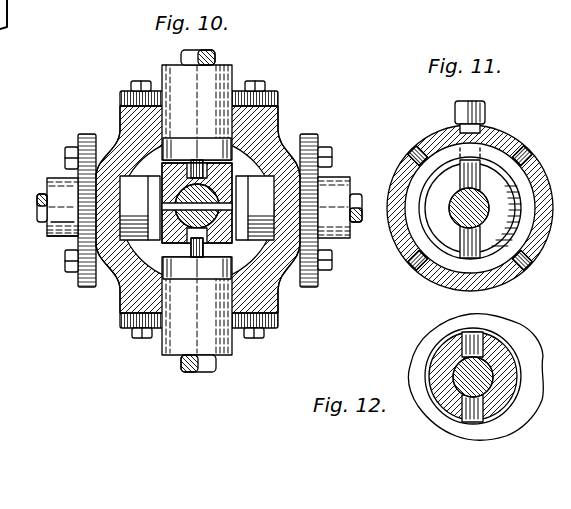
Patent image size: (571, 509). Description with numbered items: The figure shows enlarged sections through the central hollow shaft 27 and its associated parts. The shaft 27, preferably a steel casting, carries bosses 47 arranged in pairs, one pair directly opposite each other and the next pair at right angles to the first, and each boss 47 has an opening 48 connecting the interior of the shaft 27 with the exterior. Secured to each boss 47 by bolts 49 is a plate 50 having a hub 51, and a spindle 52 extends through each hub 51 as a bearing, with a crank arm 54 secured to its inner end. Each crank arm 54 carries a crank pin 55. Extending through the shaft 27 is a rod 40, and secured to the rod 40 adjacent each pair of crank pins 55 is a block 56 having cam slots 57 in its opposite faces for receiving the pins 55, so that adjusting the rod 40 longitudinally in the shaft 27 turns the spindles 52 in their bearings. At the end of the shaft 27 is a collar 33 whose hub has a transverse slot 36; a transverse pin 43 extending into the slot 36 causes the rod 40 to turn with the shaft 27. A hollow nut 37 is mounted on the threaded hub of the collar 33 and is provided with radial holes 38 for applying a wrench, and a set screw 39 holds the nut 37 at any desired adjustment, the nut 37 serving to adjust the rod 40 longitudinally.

In FIG. 10, the hollow shaft 27 is at (75, 238).
In FIG. 12, the collar 33 is at (524, 352).
In FIG. 11, the transverse slot 36 is at (484, 178).
In FIG. 12, the transverse slot 36 is at (478, 338).
In FIG. 11, the hollow nut 37 is at (505, 133).
In FIG. 11, the radial holes 38 is at (426, 160).
In FIG. 11, the set screw 39 is at (455, 113).
In FIG. 12, the set screw 39 is at (450, 355).
In FIG. 10, the rod 40 is at (258, 200).
In FIG. 11, the rod 40 is at (458, 203).
In FIG. 12, the rod 40 is at (465, 375).
In FIG. 11, the transverse pin 43 is at (453, 237).
In FIG. 10, the bosses 47 is at (288, 138).
In FIG. 10, the opening 48 is at (280, 118).
In FIG. 10, the bolts 49 is at (266, 88).
In FIG. 10, the plate 50 is at (122, 96).
In FIG. 10, the hub 51 is at (233, 76).
In FIG. 10, the spindle 52 is at (216, 57).
In FIG. 10, the crank arm 54 is at (167, 148).
In FIG. 10, the crank pin 55 is at (163, 135).
In FIG. 10, the block 56 is at (222, 243).
In FIG. 10, the cam slots 57 is at (187, 252).